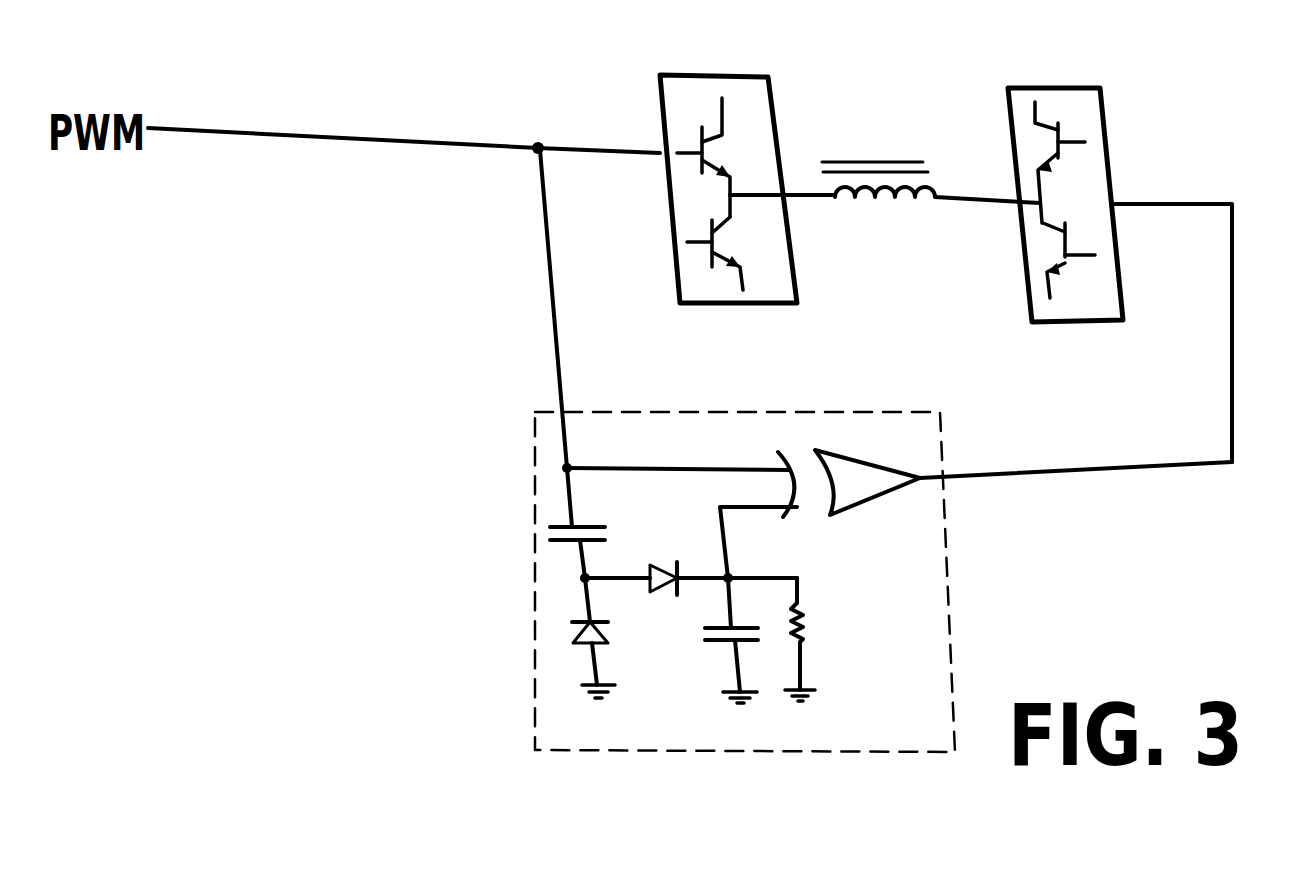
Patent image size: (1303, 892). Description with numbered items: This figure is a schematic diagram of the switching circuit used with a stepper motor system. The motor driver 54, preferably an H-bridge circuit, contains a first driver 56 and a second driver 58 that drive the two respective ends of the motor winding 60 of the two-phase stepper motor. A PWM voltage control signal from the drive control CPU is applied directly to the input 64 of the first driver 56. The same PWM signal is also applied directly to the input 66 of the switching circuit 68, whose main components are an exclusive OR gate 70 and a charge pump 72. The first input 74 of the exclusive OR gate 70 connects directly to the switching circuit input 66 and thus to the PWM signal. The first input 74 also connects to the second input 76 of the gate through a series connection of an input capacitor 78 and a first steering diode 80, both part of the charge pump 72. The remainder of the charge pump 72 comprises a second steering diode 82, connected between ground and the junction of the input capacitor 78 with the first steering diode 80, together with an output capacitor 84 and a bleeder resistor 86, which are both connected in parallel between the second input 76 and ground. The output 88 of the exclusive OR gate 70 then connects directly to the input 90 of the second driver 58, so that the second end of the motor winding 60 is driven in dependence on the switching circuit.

The motor driver 54 is at (1132, 72).
The first driver 56 is at (662, 215).
The second driver 58 is at (1117, 168).
The motor winding 60 is at (902, 208).
The input 64 is at (640, 150).
The input 66 is at (558, 398).
The switching circuit 68 is at (904, 762).
The exclusive OR gate 70 is at (880, 488).
The charge pump 72 is at (813, 705).
The first input 74 is at (783, 467).
The second input 76 is at (785, 515).
The input capacitor 78 is at (566, 543).
The first steering diode 80 is at (652, 553).
The second steering diode 82 is at (580, 627).
The output capacitor 84 is at (688, 643).
The bleeder resistor 86 is at (805, 620).
The output 88 is at (960, 470).
The input 90 is at (1127, 202).